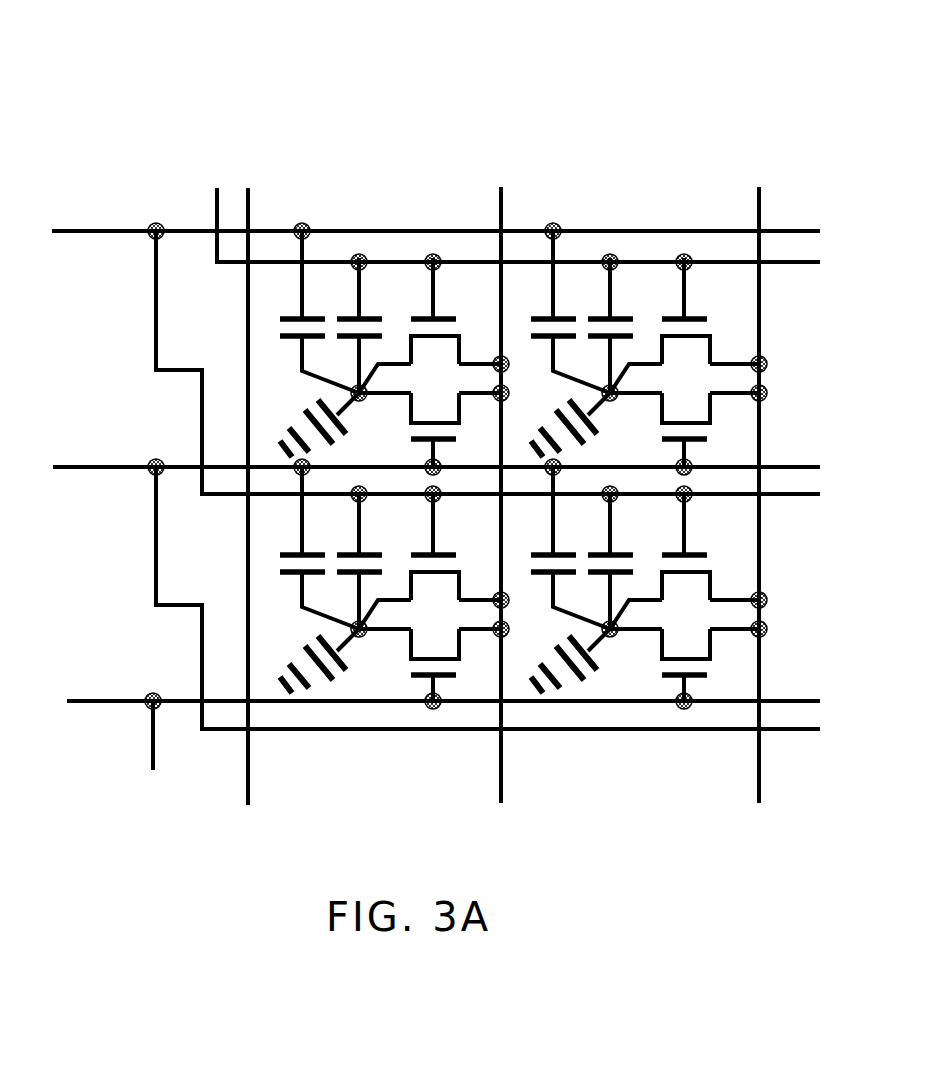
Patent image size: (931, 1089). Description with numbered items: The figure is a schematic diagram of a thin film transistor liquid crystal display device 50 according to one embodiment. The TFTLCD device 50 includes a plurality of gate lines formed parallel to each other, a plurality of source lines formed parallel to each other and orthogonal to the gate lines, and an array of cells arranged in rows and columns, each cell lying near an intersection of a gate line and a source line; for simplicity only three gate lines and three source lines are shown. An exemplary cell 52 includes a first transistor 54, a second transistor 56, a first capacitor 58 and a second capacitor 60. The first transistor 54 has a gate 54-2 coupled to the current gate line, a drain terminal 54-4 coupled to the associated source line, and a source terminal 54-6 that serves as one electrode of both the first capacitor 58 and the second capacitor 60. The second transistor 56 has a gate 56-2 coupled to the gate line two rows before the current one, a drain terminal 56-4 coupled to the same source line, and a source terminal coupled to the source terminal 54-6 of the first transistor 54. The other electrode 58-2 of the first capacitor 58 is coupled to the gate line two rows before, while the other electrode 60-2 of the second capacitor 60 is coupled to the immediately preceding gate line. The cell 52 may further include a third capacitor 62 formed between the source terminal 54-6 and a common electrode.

The TFTLCD device 50 is at (185, 153).
The cell 52 is at (633, 690).
The first transistor 54 is at (736, 667).
The gate 54-2 is at (695, 708).
The drain terminal 54-4 is at (764, 628).
The source terminal 54-6 is at (615, 634).
The second transistor 56 is at (738, 566).
The gate 56-2 is at (690, 498).
The drain terminal 56-4 is at (764, 599).
The first capacitor 58 is at (621, 554).
The other electrode 58-2 is at (606, 499).
The second capacitor 60 is at (541, 555).
The other electrode 60-2 is at (552, 471).
The third capacitor 62 is at (560, 652).